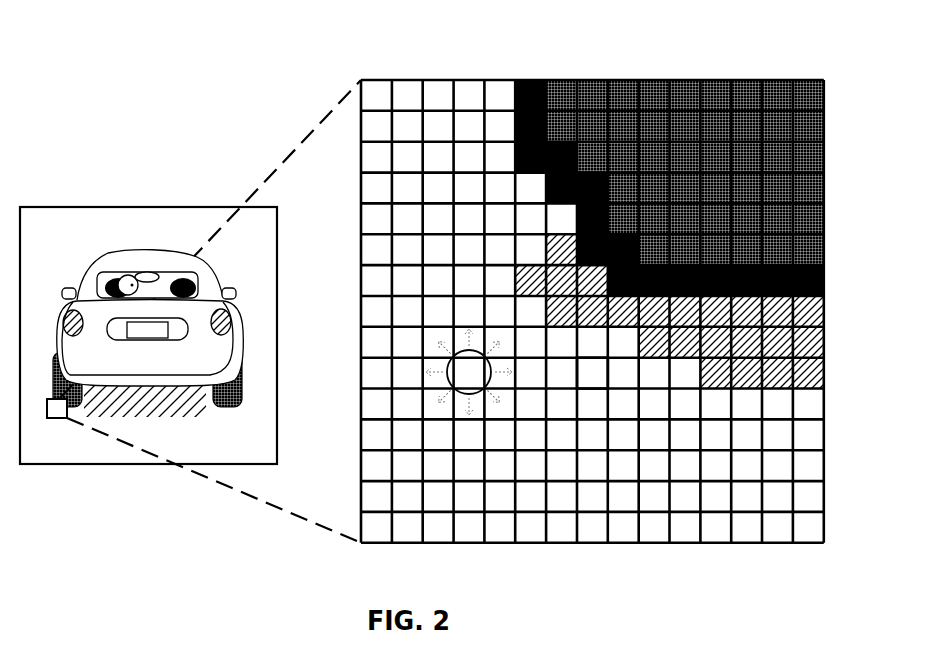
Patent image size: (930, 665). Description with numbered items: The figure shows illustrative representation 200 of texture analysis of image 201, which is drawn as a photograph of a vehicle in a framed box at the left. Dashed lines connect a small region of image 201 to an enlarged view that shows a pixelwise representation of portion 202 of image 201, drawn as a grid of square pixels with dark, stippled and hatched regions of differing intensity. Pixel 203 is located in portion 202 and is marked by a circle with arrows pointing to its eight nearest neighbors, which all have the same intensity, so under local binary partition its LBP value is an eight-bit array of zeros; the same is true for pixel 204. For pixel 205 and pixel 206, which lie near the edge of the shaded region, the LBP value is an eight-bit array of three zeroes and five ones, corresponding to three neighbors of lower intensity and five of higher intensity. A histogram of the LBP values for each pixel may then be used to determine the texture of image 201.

The illustrative representation 200 is at (438, 32).
The image 201 is at (108, 207).
The portion 202 is at (727, 80).
The pixel 203 is at (483, 386).
The pixel 204 is at (598, 378).
The pixel 205 is at (791, 386).
The pixel 206 is at (758, 384).